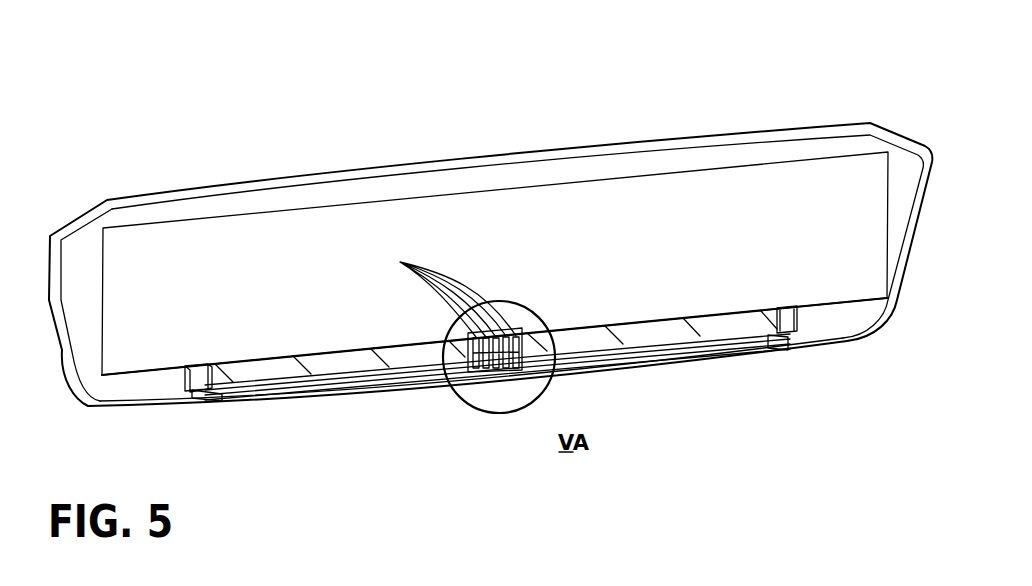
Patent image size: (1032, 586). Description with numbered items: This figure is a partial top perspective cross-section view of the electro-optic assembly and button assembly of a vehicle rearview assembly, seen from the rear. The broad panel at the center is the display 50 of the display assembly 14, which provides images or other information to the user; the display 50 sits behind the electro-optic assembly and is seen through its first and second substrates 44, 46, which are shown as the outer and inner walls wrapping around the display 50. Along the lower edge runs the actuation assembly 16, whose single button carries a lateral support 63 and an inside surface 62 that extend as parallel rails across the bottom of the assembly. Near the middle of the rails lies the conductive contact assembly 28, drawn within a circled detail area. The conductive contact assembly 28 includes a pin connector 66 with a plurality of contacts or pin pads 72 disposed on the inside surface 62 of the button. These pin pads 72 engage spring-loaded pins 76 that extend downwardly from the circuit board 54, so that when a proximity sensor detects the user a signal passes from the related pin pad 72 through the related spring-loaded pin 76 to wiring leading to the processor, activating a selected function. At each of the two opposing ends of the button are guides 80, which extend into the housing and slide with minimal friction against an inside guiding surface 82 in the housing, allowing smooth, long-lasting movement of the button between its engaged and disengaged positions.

The display assembly 14 is at (851, 108).
The actuation assembly 16 is at (217, 408).
The conductive contact assembly 28 is at (349, 407).
The first substrate 44 is at (56, 298).
The second substrate 46 is at (87, 325).
The display 50 is at (278, 206).
The circuit board 54 is at (483, 264).
The inside surface 62 is at (681, 356).
The lateral support 63 is at (267, 368).
The pin connector 66 is at (521, 337).
The contacts or pin pads 72 is at (500, 370).
The spring-loaded pins 76 is at (400, 262).
The guides 80 is at (220, 396).
The inside guiding surface 82 is at (192, 395).